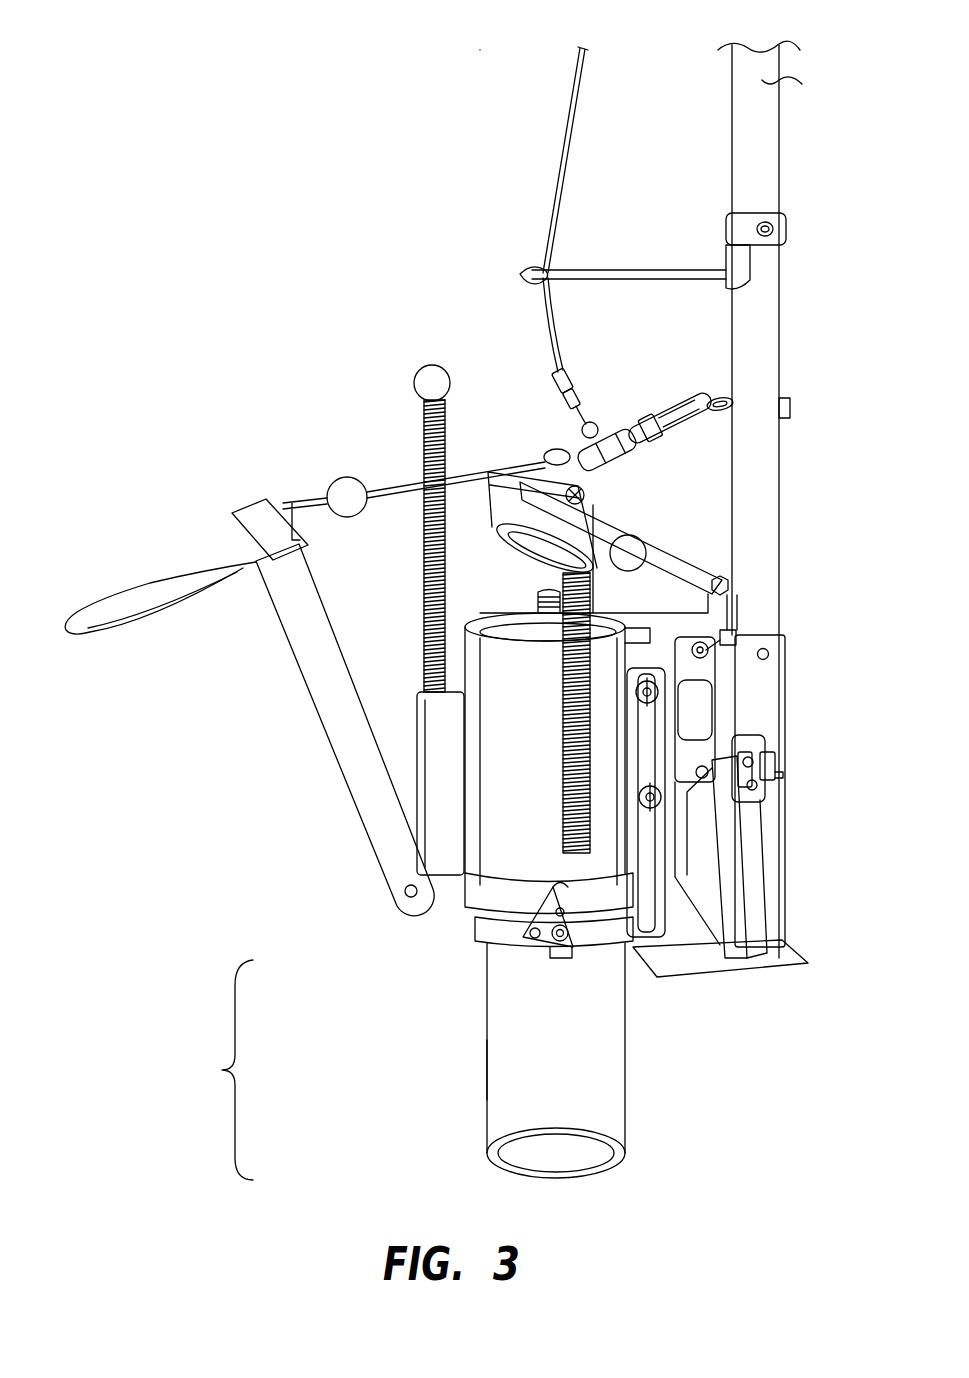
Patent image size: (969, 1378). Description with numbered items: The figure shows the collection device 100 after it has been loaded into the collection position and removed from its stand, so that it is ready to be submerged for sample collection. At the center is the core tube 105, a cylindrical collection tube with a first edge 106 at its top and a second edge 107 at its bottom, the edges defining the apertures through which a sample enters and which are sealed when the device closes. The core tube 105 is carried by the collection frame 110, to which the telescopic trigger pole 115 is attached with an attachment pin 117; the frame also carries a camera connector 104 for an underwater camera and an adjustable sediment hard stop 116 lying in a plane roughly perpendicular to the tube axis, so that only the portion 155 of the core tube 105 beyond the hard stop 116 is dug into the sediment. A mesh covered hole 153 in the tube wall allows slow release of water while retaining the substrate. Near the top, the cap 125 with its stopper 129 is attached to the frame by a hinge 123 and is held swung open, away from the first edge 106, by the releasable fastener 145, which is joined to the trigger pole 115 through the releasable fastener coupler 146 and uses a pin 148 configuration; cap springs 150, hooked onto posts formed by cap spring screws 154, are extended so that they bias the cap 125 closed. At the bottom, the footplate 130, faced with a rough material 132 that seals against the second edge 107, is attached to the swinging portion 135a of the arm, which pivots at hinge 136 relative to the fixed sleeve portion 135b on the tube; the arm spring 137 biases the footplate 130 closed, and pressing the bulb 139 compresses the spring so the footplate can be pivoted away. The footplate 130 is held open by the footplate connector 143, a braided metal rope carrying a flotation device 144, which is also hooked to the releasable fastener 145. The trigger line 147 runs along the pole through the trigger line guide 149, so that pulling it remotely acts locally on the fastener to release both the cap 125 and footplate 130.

The device 100 is at (295, 250).
The camera connector 104 is at (786, 770).
The core tube 105 is at (627, 1032).
The first edge 106 is at (500, 602).
The second edge 107 is at (578, 1160).
The collection frame 110 is at (700, 725).
The trigger pole 115 is at (782, 90).
The adjustable sediment hard stop 116 is at (808, 948).
The attachment pin 117 is at (770, 655).
The hinge 123 is at (716, 575).
The cap 125 is at (530, 464).
The stopper 129 is at (483, 468).
The footplate 130 is at (178, 560).
The rough material 132 is at (170, 598).
The swinging portion 135a is at (320, 650).
The fixed portion 135b is at (420, 702).
The hinge 136 is at (408, 898).
The arm spring 137 is at (423, 410).
The bulb 139 is at (432, 370).
The footplate connector 143 is at (400, 470).
The flotation device 144 is at (352, 520).
The releasable fastener 145 is at (628, 420).
The releasable fastener coupler 146 is at (712, 393).
The trigger line 147 is at (560, 112).
The pin 148 is at (607, 432).
The trigger line guide 149 is at (640, 265).
The cap spring 150 is at (490, 945).
The mesh covered hole 153 is at (484, 1058).
The cap spring screw 154 is at (600, 500).
The portion of the core tube 155 is at (214, 1070).